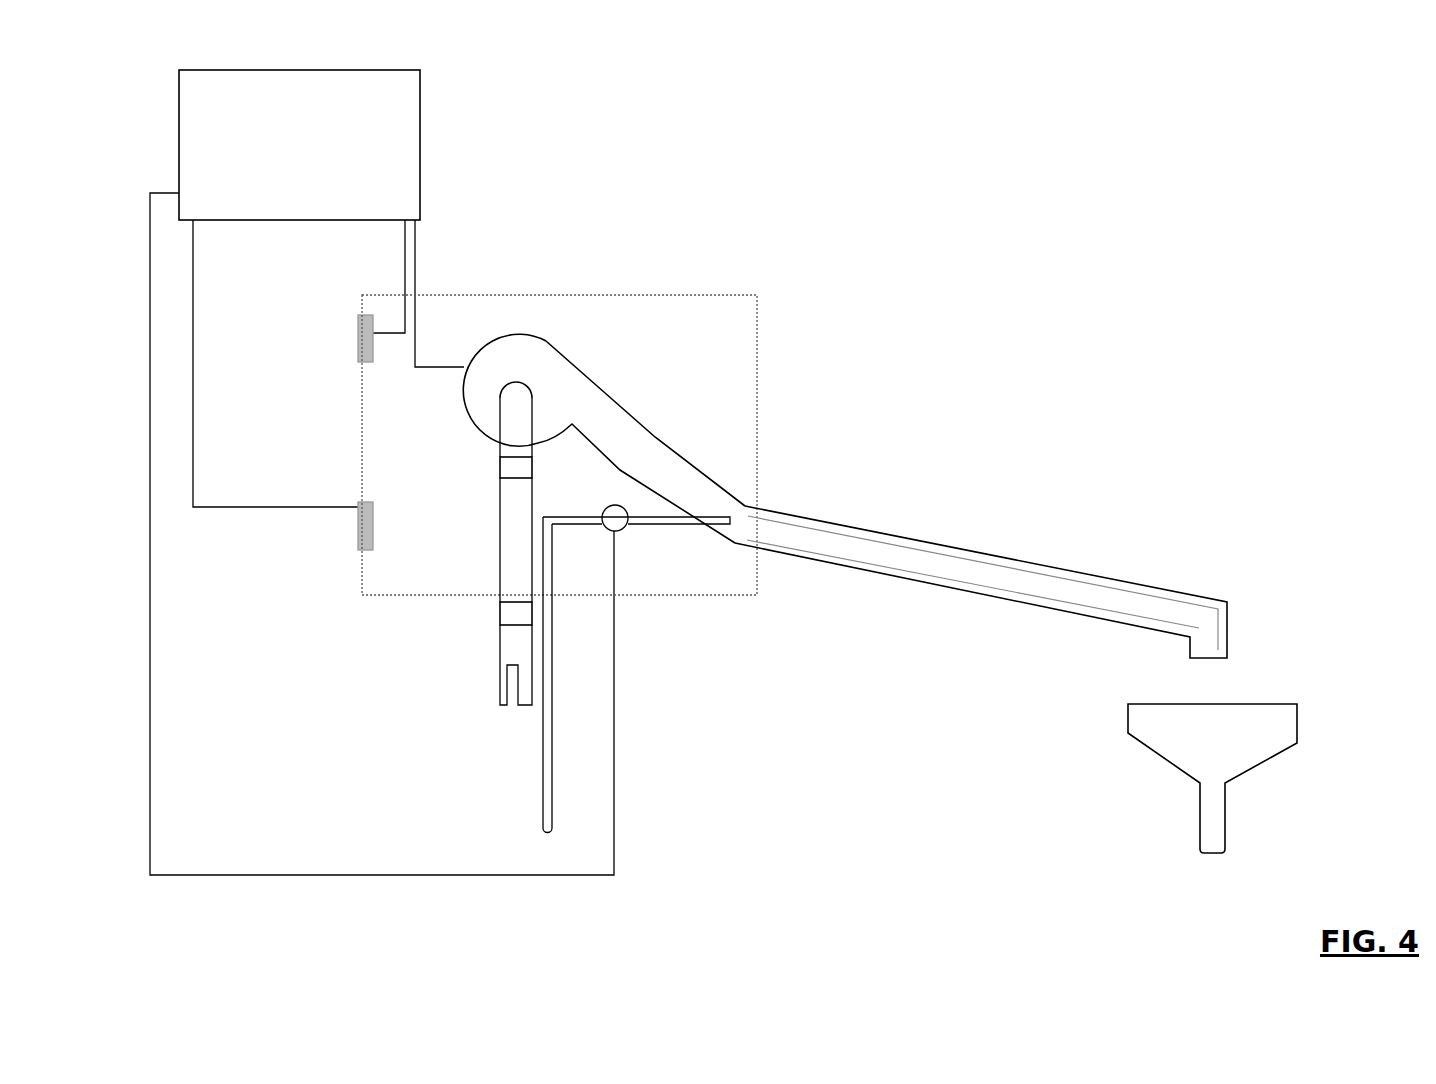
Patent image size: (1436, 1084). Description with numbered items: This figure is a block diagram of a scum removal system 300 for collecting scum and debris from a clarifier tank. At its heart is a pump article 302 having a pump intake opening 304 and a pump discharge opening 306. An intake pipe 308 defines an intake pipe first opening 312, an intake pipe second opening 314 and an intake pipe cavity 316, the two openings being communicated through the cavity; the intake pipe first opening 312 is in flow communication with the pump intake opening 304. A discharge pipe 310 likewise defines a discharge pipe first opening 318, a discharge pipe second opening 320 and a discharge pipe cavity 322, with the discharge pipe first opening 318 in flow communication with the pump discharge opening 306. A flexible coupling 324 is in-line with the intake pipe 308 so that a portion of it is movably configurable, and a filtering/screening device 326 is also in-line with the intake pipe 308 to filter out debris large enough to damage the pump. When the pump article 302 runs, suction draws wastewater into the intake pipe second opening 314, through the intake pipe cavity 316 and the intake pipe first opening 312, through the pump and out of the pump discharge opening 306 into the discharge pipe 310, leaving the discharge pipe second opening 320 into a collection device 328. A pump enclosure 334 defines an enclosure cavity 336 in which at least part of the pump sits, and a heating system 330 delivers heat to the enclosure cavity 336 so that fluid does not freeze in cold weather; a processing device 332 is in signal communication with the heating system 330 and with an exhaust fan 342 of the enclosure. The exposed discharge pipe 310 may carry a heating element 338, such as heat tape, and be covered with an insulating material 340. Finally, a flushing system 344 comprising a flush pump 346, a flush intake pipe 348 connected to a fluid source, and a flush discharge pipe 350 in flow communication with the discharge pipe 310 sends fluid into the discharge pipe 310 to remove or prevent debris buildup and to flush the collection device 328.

The scum removal system 300 is at (729, 472).
The pump article 302 is at (544, 333).
The pump intake opening 304 is at (409, 427).
The pump discharge opening 306 is at (645, 420).
The intake pipe 308 is at (460, 540).
The discharge pipe 310 is at (981, 546).
The intake pipe first opening 312 is at (491, 324).
The intake pipe second opening 314 is at (458, 688).
The intake pipe cavity 316 is at (462, 590).
The discharge pipe first opening 318 is at (689, 468).
The discharge pipe second opening 320 is at (1300, 630).
The discharge pipe cavity 322 is at (982, 566).
The flexible coupling 324 is at (457, 633).
The filtering/screening device 326 is at (461, 486).
The collection device 328 is at (1212, 778).
The heating system 330 is at (337, 293).
The processing device 332 is at (347, 131).
The pump enclosure 334 is at (605, 395).
The enclosure cavity 336 is at (559, 445).
The heating element 338 is at (968, 610).
The insulating material 340 is at (1000, 648).
The exhaust fan 342 is at (382, 534).
The flushing system 344 is at (592, 489).
The flush pump 346 is at (643, 590).
The flush intake pipe 348 is at (486, 675).
The flush discharge pipe 350 is at (640, 579).